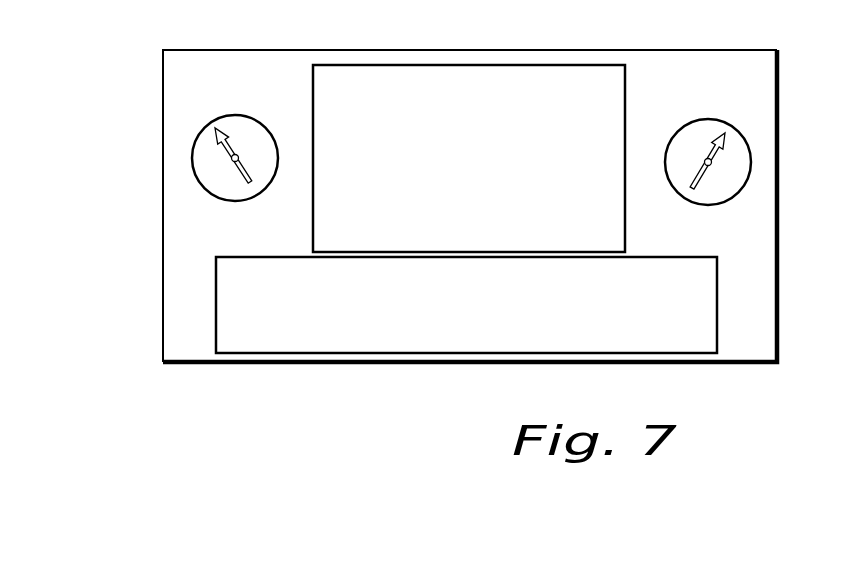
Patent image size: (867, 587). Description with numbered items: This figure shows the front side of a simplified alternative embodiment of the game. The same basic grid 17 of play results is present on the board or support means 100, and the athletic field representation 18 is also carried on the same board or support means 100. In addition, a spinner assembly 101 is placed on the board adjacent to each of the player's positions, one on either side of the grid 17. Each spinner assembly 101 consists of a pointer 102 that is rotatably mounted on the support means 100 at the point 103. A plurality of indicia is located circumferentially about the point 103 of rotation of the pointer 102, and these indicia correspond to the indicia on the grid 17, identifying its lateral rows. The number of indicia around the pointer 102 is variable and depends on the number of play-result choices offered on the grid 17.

The support means 100 is at (762, 238).
The spinner assembly 101 is at (205, 108).
The pointer 102 is at (716, 141).
The point 103 is at (718, 176).
The grid 17 is at (359, 92).
The athletic field representation 18 is at (240, 291).